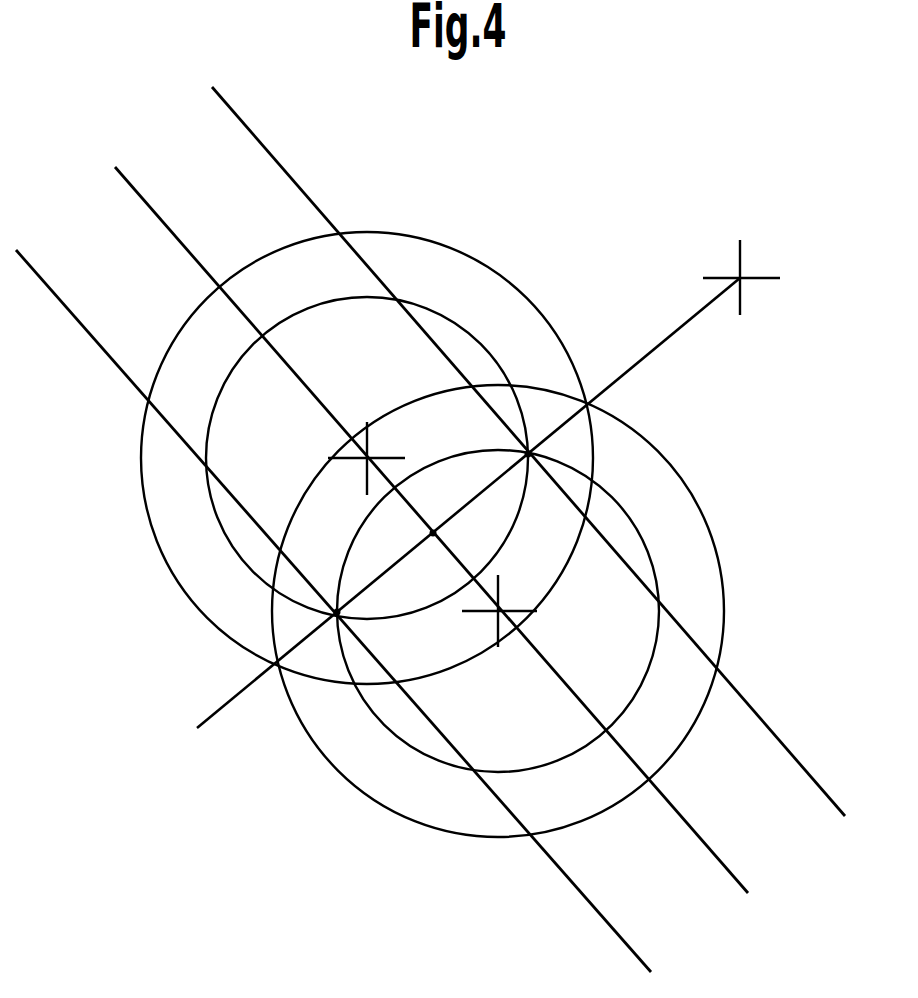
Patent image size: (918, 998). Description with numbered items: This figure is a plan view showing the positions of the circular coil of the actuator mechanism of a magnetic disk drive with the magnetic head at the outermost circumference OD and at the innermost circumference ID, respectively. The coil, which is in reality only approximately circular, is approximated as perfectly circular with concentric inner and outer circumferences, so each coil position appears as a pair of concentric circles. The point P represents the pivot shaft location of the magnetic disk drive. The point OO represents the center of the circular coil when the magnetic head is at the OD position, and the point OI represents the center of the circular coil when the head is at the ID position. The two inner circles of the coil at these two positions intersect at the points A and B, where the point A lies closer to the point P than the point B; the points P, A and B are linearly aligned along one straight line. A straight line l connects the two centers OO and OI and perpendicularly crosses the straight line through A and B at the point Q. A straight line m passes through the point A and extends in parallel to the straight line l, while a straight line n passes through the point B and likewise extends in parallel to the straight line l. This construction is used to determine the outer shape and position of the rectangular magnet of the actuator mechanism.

The outermost circumference OD is at (398, 534).
The innermost circumference ID is at (432, 576).
The center of the circular coil at the OD position OO is at (344, 458).
The center of the circular coil at the ID position OI is at (490, 615).
The pivot shaft location P is at (741, 276).
The intersection point A is at (539, 432).
The intersection point B is at (314, 630).
The crossing point Q is at (434, 516).
The straight line m is at (528, 451).
The straight line l is at (431, 530).
The straight line n is at (339, 611).